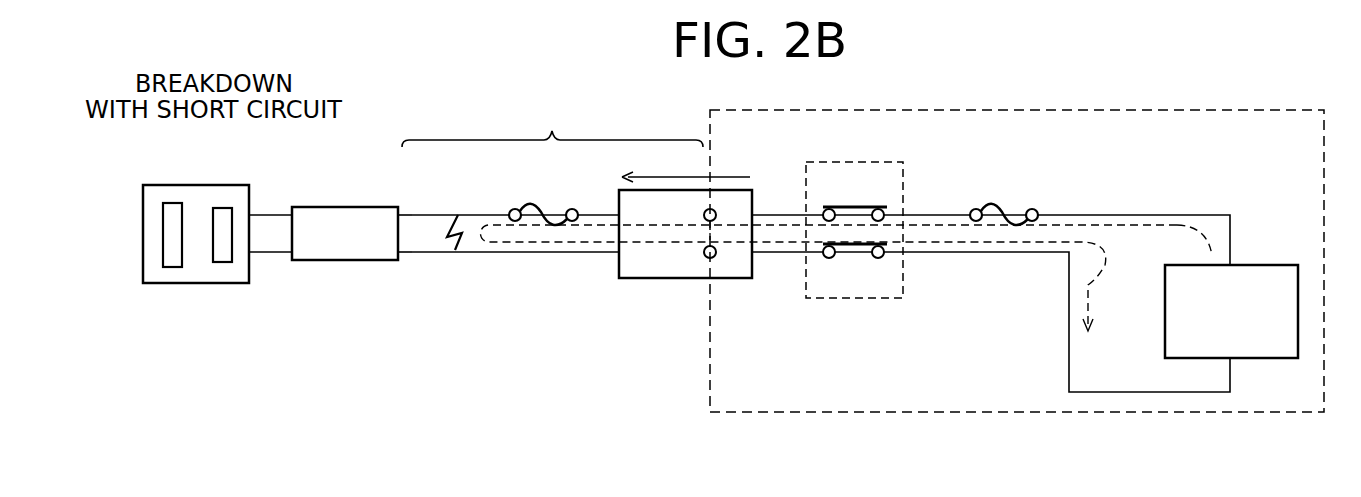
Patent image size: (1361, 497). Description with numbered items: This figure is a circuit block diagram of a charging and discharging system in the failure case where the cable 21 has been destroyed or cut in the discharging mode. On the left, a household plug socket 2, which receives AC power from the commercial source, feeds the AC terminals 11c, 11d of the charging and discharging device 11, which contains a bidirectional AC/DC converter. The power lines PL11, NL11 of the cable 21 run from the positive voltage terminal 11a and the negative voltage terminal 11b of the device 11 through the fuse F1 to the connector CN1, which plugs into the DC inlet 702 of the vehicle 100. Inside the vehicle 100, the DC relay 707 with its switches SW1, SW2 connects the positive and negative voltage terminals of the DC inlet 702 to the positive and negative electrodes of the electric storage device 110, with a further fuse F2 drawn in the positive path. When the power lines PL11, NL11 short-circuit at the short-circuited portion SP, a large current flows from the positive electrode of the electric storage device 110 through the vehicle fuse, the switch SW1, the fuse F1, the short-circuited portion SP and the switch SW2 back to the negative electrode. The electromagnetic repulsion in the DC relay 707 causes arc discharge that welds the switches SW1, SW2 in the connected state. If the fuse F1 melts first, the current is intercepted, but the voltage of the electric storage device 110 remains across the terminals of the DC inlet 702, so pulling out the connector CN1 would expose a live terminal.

The household plug socket 2 is at (208, 185).
The charging and discharging device 11 is at (348, 207).
The positive voltage terminal 11a is at (398, 207).
The negative voltage terminal 11b is at (398, 260).
The AC terminal 11c is at (292, 207).
The AC terminal 11d is at (292, 260).
The power line PL11 is at (461, 213).
The power line NL11 is at (535, 253).
The short-circuited portion SP is at (467, 252).
The fuse F1 is at (530, 198).
The cable 21 is at (552, 124).
The connector CN1 is at (663, 279).
The DC inlet 702 is at (735, 279).
The vehicle 100 is at (1167, 110).
The DC relay 707 is at (853, 161).
The switch SW1 is at (858, 206).
The switch SW2 is at (857, 247).
The fuse F2 is at (990, 199).
The electric storage device 110 is at (1262, 265).